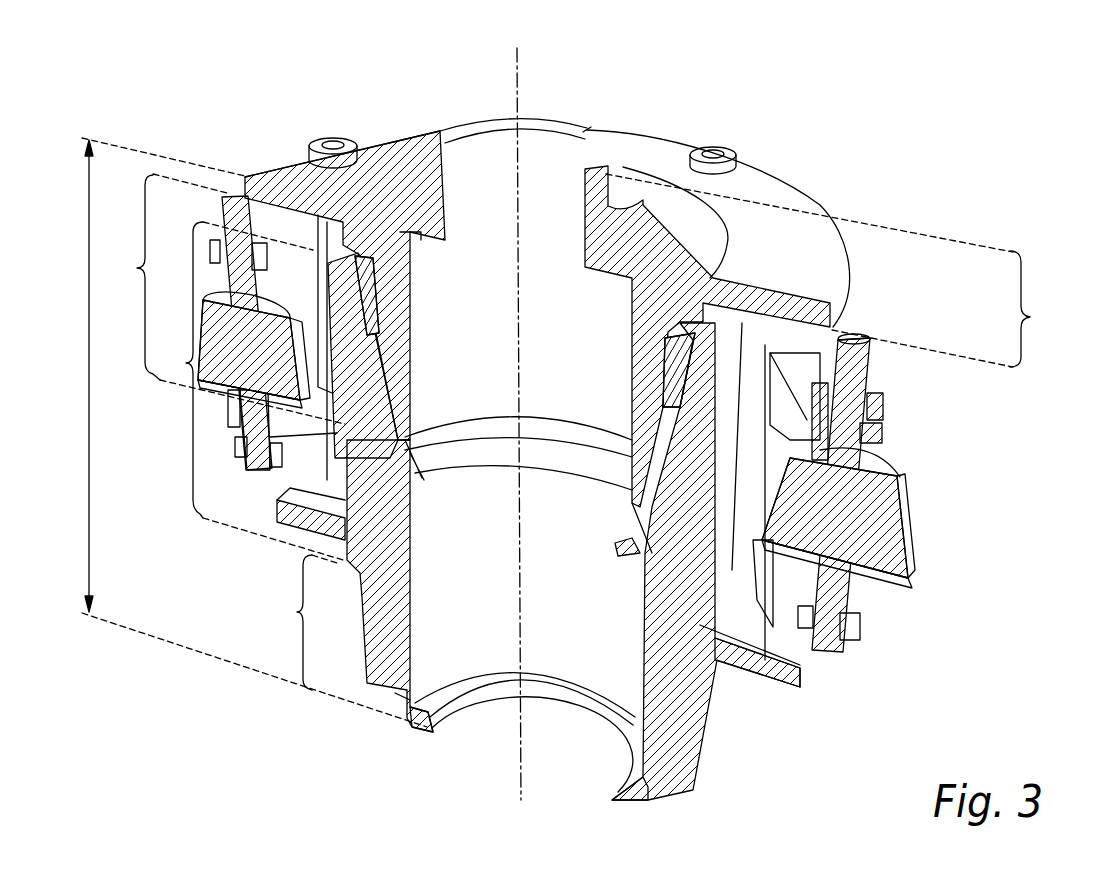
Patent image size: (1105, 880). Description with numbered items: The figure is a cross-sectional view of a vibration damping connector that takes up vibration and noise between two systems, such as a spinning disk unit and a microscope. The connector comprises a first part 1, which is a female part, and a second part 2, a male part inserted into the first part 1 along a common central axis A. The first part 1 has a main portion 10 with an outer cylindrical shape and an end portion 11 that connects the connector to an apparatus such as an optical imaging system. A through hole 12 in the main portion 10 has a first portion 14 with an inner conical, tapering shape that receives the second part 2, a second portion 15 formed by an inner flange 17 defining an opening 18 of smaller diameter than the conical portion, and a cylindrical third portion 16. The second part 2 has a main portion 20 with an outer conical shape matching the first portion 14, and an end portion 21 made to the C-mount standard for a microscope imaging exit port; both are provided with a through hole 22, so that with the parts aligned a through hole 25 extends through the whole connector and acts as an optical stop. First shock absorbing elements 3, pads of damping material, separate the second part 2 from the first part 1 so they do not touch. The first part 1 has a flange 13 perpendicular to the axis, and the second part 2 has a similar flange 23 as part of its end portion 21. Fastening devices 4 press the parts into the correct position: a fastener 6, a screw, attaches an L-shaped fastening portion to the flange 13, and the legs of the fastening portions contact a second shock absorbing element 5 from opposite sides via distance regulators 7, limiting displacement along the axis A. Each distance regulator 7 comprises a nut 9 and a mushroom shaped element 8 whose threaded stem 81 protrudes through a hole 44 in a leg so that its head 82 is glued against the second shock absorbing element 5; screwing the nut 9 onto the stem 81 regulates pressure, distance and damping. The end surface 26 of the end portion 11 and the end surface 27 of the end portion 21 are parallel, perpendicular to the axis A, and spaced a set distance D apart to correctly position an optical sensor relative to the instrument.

The first part 1 is at (733, 692).
The second part 2 is at (806, 176).
The first shock absorbing elements 3 is at (668, 376).
The fastening devices 4 is at (1020, 456).
The second shock absorbing element 5 is at (909, 542).
The fastener 6 is at (740, 157).
The distance regulators 7 is at (884, 371).
The mushroom shaped element 8 is at (860, 435).
The nut 9 is at (880, 413).
The main portion 10 is at (249, 391).
The end portion 11 is at (303, 622).
The through hole 12 is at (485, 748).
The flange 13 is at (797, 653).
The first portion 14 is at (400, 447).
The second portion 15 is at (435, 476).
The third portion 16 is at (423, 607).
The inner flange 17 is at (632, 543).
The opening 18 is at (472, 481).
The main portion 20 is at (226, 299).
The end portion 21 is at (1036, 309).
The through hole 22 is at (590, 129).
The flange 23 is at (835, 237).
The through hole 25 is at (558, 104).
The end surface 26 is at (413, 720).
The end surface 27 is at (463, 130).
The hole 44 is at (900, 453).
The threaded stem 81 is at (880, 397).
The head 82 is at (903, 483).
The central axis A is at (524, 790).
The distance D is at (245, 432).